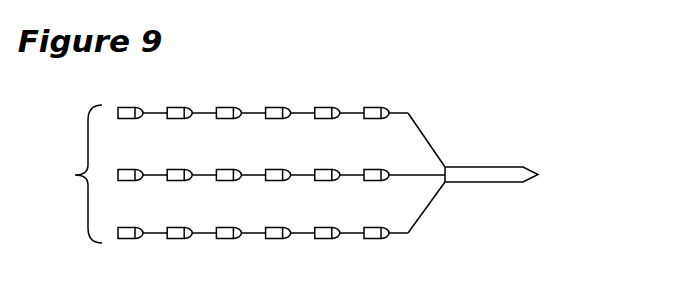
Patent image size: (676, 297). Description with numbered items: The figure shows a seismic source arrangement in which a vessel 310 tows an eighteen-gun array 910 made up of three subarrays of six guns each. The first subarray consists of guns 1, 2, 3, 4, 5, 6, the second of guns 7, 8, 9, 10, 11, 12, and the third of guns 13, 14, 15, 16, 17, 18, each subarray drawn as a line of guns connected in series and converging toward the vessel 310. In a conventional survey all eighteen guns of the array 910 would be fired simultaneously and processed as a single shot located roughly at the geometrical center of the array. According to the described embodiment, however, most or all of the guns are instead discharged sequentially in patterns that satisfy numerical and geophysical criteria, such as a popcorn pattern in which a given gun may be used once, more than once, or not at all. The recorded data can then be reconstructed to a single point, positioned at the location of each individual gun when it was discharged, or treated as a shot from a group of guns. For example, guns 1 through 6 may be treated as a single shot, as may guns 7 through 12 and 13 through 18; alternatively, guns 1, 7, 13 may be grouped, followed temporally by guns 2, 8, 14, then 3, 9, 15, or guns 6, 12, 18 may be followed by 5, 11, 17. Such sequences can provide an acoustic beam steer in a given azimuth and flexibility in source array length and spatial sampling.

The gun 1 is at (142, 102).
The gun 2 is at (191, 102).
The gun 3 is at (240, 102).
The gun 4 is at (290, 102).
The gun 5 is at (339, 102).
The gun 6 is at (386, 102).
The gun 7 is at (142, 163).
The gun 8 is at (191, 163).
The gun 9 is at (240, 163).
The gun 10 is at (289, 163).
The gun 11 is at (338, 163).
The gun 12 is at (403, 163).
The gun 13 is at (141, 221).
The gun 14 is at (190, 221).
The gun 15 is at (239, 221).
The gun 16 is at (289, 221).
The gun 17 is at (338, 221).
The gun 18 is at (385, 221).
The array 910 is at (66, 174).
The vessel 310 is at (523, 165).